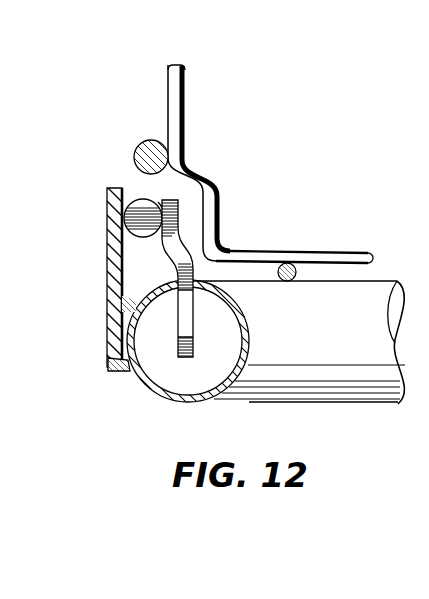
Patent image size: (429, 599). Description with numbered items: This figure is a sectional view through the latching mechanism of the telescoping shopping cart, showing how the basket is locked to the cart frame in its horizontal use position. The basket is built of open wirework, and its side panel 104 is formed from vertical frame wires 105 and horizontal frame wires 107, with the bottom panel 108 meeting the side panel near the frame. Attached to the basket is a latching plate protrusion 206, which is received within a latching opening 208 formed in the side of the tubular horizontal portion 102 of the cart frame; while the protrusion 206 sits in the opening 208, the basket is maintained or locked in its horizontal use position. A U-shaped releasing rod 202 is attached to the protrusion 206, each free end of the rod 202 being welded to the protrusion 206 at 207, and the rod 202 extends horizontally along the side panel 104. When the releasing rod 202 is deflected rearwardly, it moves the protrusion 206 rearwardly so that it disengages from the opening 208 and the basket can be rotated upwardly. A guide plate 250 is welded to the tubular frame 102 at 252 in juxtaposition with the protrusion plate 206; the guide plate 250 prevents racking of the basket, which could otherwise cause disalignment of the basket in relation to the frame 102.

The tubular horizontal portion 102 is at (318, 383).
The side panel 104 is at (168, 82).
The vertical frame wire 105 is at (185, 86).
The horizontal frame wire 107 is at (155, 142).
The bottom panel 108 is at (352, 249).
The releasing rod 202 is at (126, 213).
The latching plate protrusion 206 is at (165, 392).
The weld 207 is at (158, 202).
The latching opening 208 is at (202, 279).
The guide plate 250 is at (107, 315).
The weld 252 is at (128, 297).